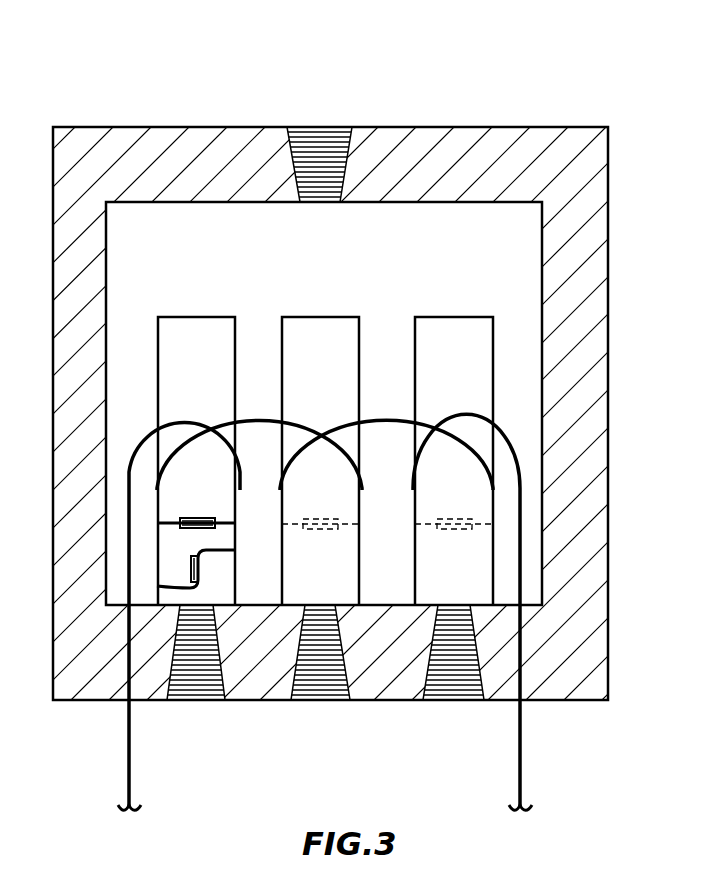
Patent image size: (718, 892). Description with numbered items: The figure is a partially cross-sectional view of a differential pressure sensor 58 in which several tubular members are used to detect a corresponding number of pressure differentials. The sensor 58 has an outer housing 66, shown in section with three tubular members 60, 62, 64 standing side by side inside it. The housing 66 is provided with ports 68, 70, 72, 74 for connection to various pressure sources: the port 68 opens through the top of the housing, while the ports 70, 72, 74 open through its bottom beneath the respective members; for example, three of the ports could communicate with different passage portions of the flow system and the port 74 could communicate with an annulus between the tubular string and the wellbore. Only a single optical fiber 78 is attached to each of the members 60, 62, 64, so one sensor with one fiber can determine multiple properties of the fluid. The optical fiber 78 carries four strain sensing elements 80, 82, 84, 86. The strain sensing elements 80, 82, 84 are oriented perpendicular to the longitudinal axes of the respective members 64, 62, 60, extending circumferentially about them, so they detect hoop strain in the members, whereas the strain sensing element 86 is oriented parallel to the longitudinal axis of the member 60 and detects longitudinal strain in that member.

The differential pressure sensor 58 is at (612, 112).
The tubular member 60 is at (178, 316).
The tubular member 62 is at (305, 316).
The tubular member 64 is at (428, 316).
The outer housing 66 is at (610, 253).
The port 68 is at (348, 136).
The port 70 is at (208, 683).
The port 72 is at (343, 680).
The port 74 is at (462, 683).
The optical fiber 78 is at (126, 753).
The strain sensing element 80 is at (446, 530).
The strain sensing element 82 is at (307, 530).
The strain sensing element 84 is at (195, 515).
The strain sensing element 86 is at (200, 568).